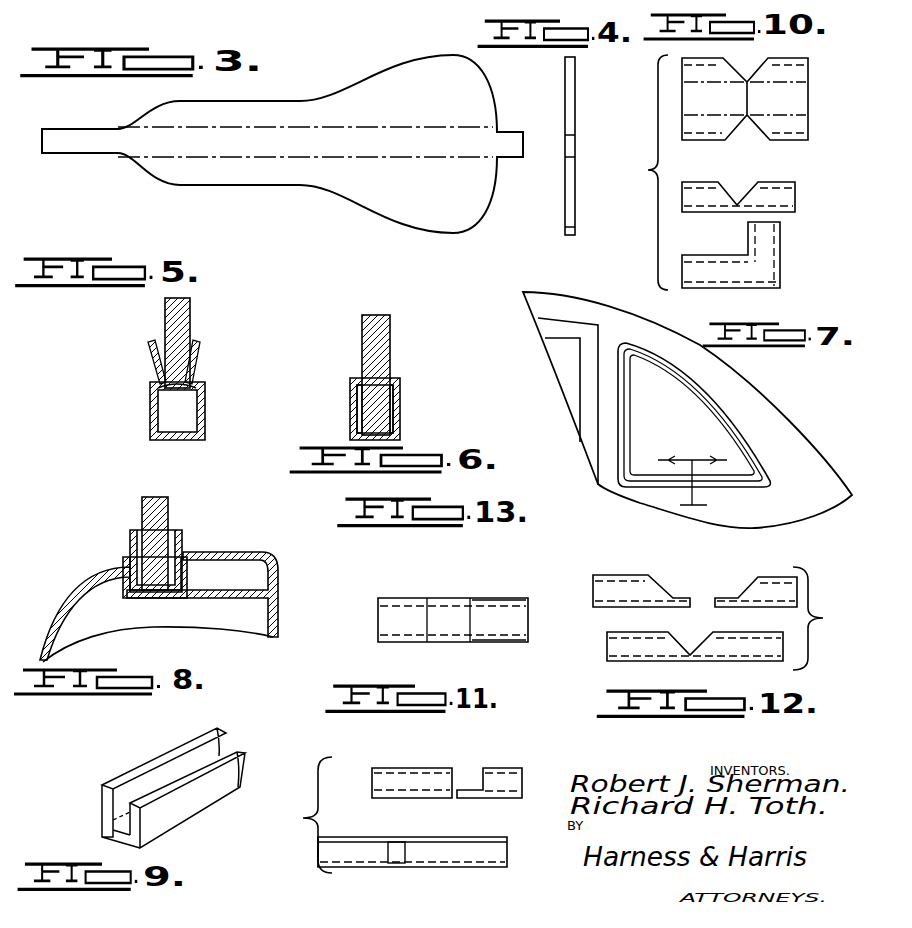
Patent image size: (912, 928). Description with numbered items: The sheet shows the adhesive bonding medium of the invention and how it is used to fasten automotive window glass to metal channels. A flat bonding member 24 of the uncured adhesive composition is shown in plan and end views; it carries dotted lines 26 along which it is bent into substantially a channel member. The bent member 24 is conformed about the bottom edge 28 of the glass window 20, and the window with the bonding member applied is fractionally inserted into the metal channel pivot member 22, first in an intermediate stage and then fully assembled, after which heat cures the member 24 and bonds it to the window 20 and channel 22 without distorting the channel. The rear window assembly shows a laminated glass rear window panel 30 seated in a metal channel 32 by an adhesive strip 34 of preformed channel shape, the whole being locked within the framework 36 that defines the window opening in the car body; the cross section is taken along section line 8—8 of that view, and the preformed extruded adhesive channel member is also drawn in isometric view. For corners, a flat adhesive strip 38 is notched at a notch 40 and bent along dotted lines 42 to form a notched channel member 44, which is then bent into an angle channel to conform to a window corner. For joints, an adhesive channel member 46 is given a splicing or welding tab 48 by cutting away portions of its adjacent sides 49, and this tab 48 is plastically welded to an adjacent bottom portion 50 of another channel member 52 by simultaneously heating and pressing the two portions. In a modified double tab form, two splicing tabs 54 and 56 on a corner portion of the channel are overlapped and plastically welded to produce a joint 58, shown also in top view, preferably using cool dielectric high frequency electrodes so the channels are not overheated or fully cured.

In FIG. 7, the section line 8— 8 is at (689, 487).
In FIG. 5, the glass window 20 is at (185, 308).
In FIG. 6, the glass window 20 is at (390, 325).
In FIG. 5, the metal channel pivot member 22 is at (205, 401).
In FIG. 6, the metal channel pivot member 22 is at (400, 398).
In FIG. 3, the bonding member 24 is at (423, 67).
In FIG. 4, the bonding member 24 is at (566, 228).
In FIG. 5, the bonding member 24 is at (205, 343).
In FIG. 6, the bonding member 24 is at (393, 380).
In FIG. 3, the dotted lines 26 is at (372, 157).
In FIG. 5, the bottom edge of the window 28 is at (160, 379).
In FIG. 7, the rear window panel 30 is at (628, 410).
In FIG. 8, the rear window panel 30 is at (168, 503).
In FIG. 7, the metal channel 32 is at (632, 425).
In FIG. 8, the metal channel 32 is at (184, 542).
In FIG. 8, the adhesive strip 34 is at (176, 523).
In FIG. 9, the adhesive strip 34 is at (165, 765).
In FIG. 8, the framework 36 is at (283, 550).
In FIG. 10, the adhesive strip 38 is at (800, 125).
In FIG. 10, the notch 40 is at (742, 104).
In FIG. 10, the dotted lines 42 is at (793, 83).
In FIG. 10, the notched channel member 44 is at (790, 193).
In FIG. 11, the adhesive channel member 46 is at (522, 777).
In FIG. 11, the splicing or welding tab 48 is at (470, 790).
In FIG. 11, the adjacent sides 49 is at (428, 780).
In FIG. 11, the bottom portion 50 is at (395, 860).
In FIG. 11, the channel member 52 is at (348, 829).
In FIG. 13, the splicing tab 54 is at (436, 617).
In FIG. 12, the splicing tab 54 is at (740, 597).
In FIG. 13, the splicing tab 56 is at (490, 600).
In FIG. 12, the splicing tab 56 is at (673, 598).
In FIG. 13, the joint 58 is at (455, 596).
In FIG. 12, the joint 58 is at (685, 670).